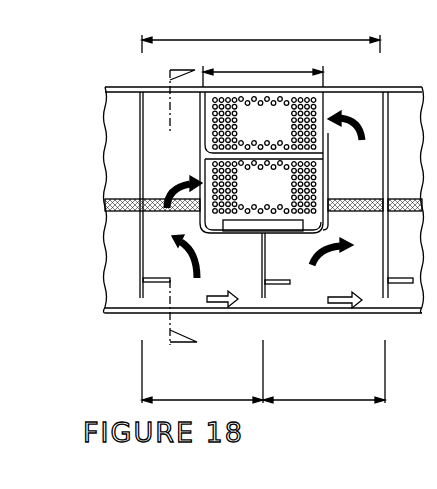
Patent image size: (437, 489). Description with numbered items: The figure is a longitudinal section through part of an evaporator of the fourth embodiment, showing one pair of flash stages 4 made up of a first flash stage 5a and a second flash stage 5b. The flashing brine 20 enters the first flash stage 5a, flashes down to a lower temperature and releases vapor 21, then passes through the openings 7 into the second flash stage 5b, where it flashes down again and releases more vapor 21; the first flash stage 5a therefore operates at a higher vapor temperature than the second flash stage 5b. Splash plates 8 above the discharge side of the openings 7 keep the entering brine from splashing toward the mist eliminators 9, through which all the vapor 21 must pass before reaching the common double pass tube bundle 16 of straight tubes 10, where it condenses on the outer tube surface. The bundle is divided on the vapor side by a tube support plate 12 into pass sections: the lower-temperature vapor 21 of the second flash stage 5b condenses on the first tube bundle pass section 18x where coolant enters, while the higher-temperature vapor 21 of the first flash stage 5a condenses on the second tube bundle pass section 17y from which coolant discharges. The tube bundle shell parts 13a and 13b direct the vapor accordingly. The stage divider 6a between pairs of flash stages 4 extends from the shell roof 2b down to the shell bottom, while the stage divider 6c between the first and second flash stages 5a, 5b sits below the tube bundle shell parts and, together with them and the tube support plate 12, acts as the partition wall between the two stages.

The shell roof 2b is at (118, 87).
The pair of flash stages 4 is at (255, 40).
The common double pass tube bundle 16 is at (253, 72).
The flashing brine 20 is at (335, 318).
The tube support plate 12 is at (325, 99).
The straight tubes 10 is at (317, 107).
The tube bundle shell part 13b is at (197, 128).
The tube bundle shell part 13a is at (335, 193).
The first tube bundle pass section 18x is at (288, 128).
The second tube bundle pass section 17y is at (285, 196).
The mist eliminators 9 is at (183, 211).
The splash plates 8 is at (413, 280).
The stage divider 6a is at (141, 268).
The stage divider 6c is at (263, 263).
The vapor 21 is at (320, 268).
The openings 7 is at (388, 298).
The first flash stage 5a is at (193, 400).
The second flash stage 5b is at (302, 400).